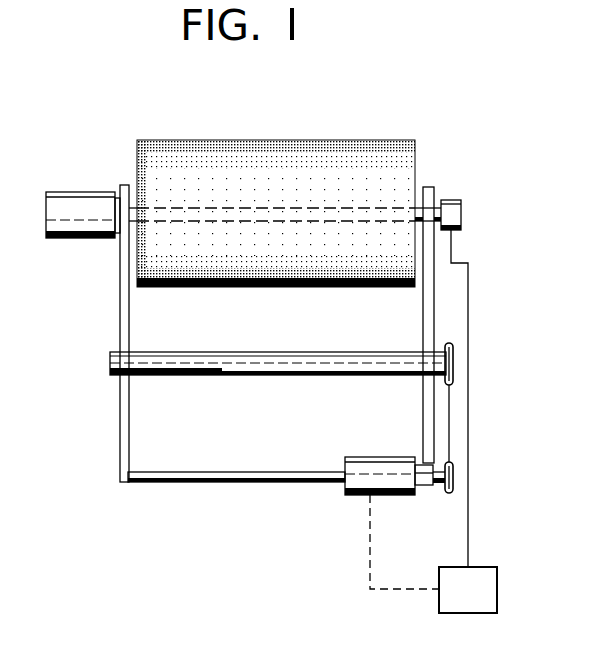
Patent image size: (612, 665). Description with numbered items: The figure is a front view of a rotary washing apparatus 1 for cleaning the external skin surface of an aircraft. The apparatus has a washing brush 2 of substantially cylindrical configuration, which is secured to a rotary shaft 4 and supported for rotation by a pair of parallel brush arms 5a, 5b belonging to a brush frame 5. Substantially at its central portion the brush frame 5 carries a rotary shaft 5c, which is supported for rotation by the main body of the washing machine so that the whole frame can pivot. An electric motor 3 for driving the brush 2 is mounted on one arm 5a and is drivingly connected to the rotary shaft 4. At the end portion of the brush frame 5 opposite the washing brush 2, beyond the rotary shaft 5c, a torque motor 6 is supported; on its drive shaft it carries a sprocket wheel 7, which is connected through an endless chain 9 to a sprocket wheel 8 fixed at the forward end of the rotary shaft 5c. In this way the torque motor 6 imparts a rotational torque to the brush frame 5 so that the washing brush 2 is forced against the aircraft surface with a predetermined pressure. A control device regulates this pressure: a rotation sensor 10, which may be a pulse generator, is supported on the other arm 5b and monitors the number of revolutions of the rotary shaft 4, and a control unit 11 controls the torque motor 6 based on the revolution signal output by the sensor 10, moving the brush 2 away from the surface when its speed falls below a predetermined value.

The rotary washing apparatus 1 is at (114, 128).
The washing brush 2 is at (238, 142).
The electric motor 3 is at (68, 203).
The rotary shaft 4 is at (390, 207).
The brush frame 5 is at (249, 376).
The brush arm 5a is at (125, 323).
The brush arm 5b is at (423, 333).
The rotary shaft 5c is at (222, 374).
The torque motor 6 is at (390, 490).
The sprocket wheel 7 is at (452, 482).
The sprocket wheel 8 is at (453, 365).
The endless chain 9 is at (450, 433).
The rotation sensor 10 is at (452, 210).
The control unit 11 is at (482, 615).